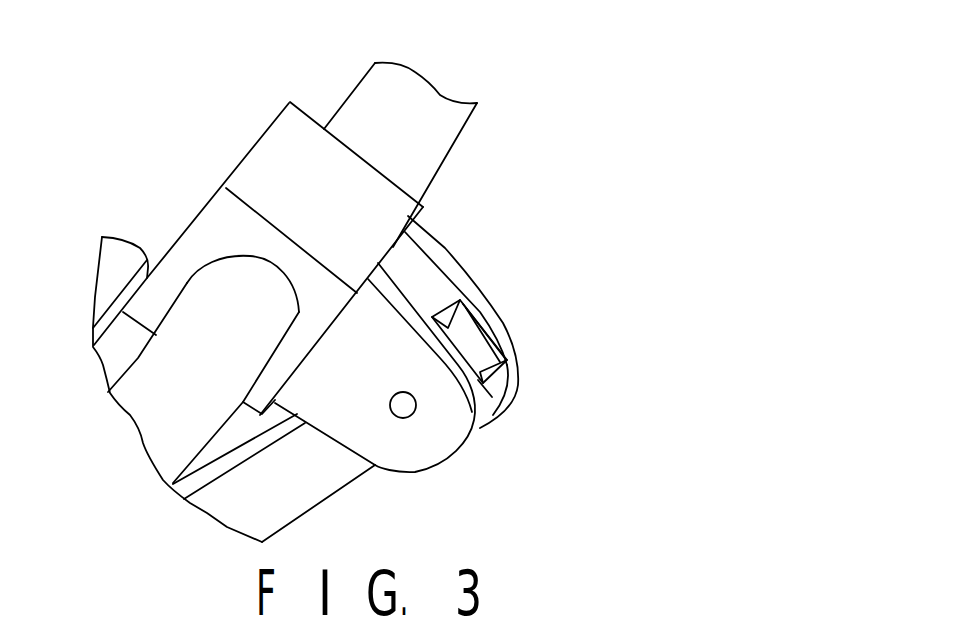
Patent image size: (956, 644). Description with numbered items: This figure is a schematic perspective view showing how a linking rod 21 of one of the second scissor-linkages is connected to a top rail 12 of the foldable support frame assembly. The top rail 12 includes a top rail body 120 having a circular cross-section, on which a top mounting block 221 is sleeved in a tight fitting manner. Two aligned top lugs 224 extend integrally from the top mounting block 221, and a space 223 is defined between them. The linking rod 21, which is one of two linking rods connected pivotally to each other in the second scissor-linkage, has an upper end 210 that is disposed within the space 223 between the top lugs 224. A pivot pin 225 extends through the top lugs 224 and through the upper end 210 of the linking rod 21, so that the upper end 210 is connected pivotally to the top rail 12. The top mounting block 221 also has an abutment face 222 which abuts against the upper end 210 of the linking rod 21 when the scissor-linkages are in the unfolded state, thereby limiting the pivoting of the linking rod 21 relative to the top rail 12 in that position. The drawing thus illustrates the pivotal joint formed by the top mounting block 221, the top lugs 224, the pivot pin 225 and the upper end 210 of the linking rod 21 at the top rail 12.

The top rail 12 is at (193, 392).
The linking rod 21 is at (233, 488).
The top rail body 120 is at (427, 112).
The upper end 210 is at (492, 397).
The top mounting block 221 is at (293, 153).
The abutment face 222 is at (405, 250).
The space 223 is at (431, 278).
The top lugs 224 is at (482, 298).
The pivot pin 225 is at (403, 412).